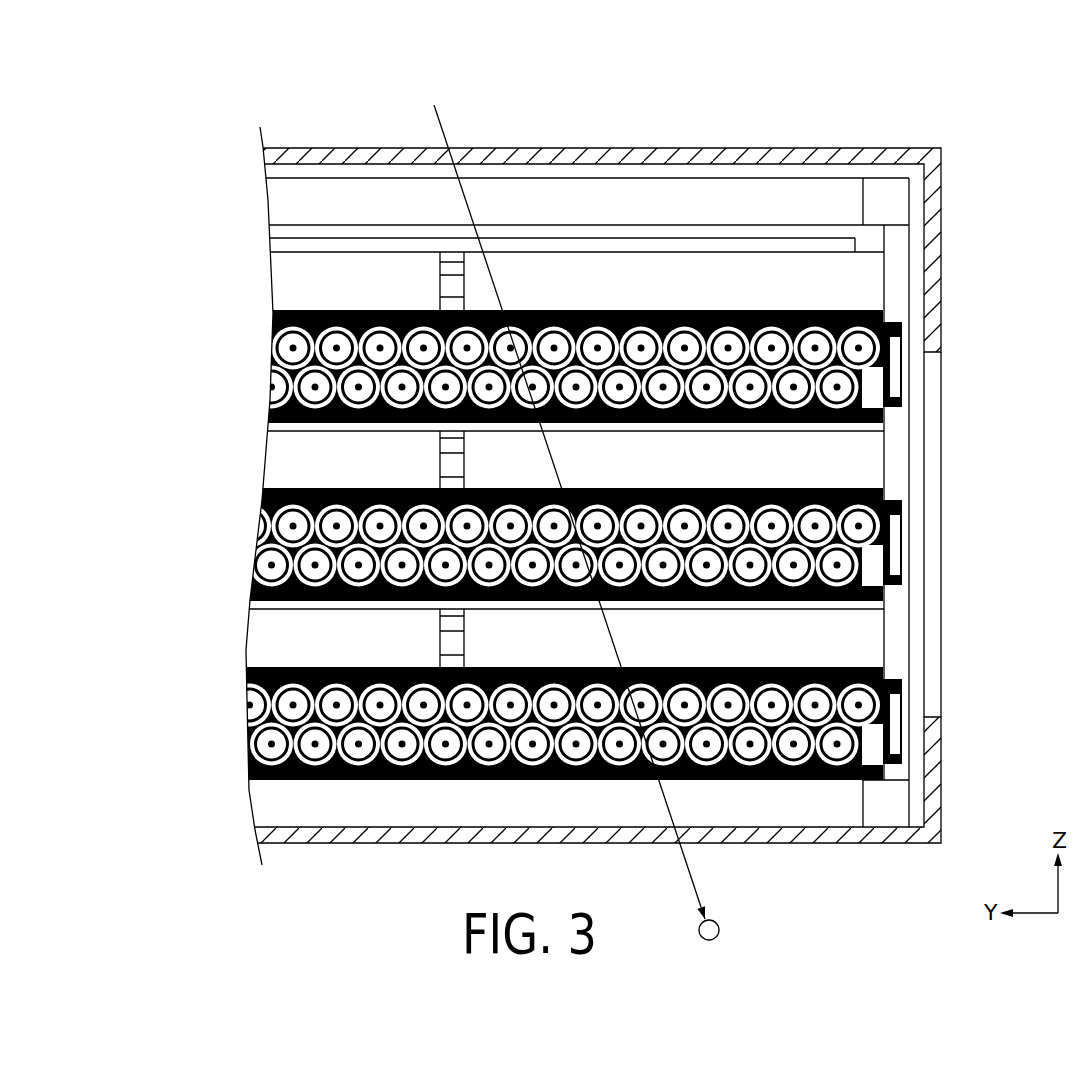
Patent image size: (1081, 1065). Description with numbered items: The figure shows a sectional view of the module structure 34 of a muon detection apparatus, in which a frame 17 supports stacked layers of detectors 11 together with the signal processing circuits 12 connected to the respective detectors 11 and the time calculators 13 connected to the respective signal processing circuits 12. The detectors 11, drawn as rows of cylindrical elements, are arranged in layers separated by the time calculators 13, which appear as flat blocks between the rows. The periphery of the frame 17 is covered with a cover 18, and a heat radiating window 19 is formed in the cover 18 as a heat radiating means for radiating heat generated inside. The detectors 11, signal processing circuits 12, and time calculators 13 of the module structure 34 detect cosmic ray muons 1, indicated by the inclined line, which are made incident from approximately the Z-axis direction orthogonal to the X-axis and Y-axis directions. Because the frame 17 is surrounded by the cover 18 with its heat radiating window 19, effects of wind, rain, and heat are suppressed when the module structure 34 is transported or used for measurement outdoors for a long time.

The cosmic ray muons 1 is at (719, 930).
The detectors 11 is at (585, 542).
The signal processing circuits 12 is at (358, 380).
The time calculators 13 is at (405, 280).
The frame 17 is at (678, 178).
The cover 18 is at (618, 148).
The heat radiating window 19 is at (933, 352).
The module structure 34 is at (755, 115).